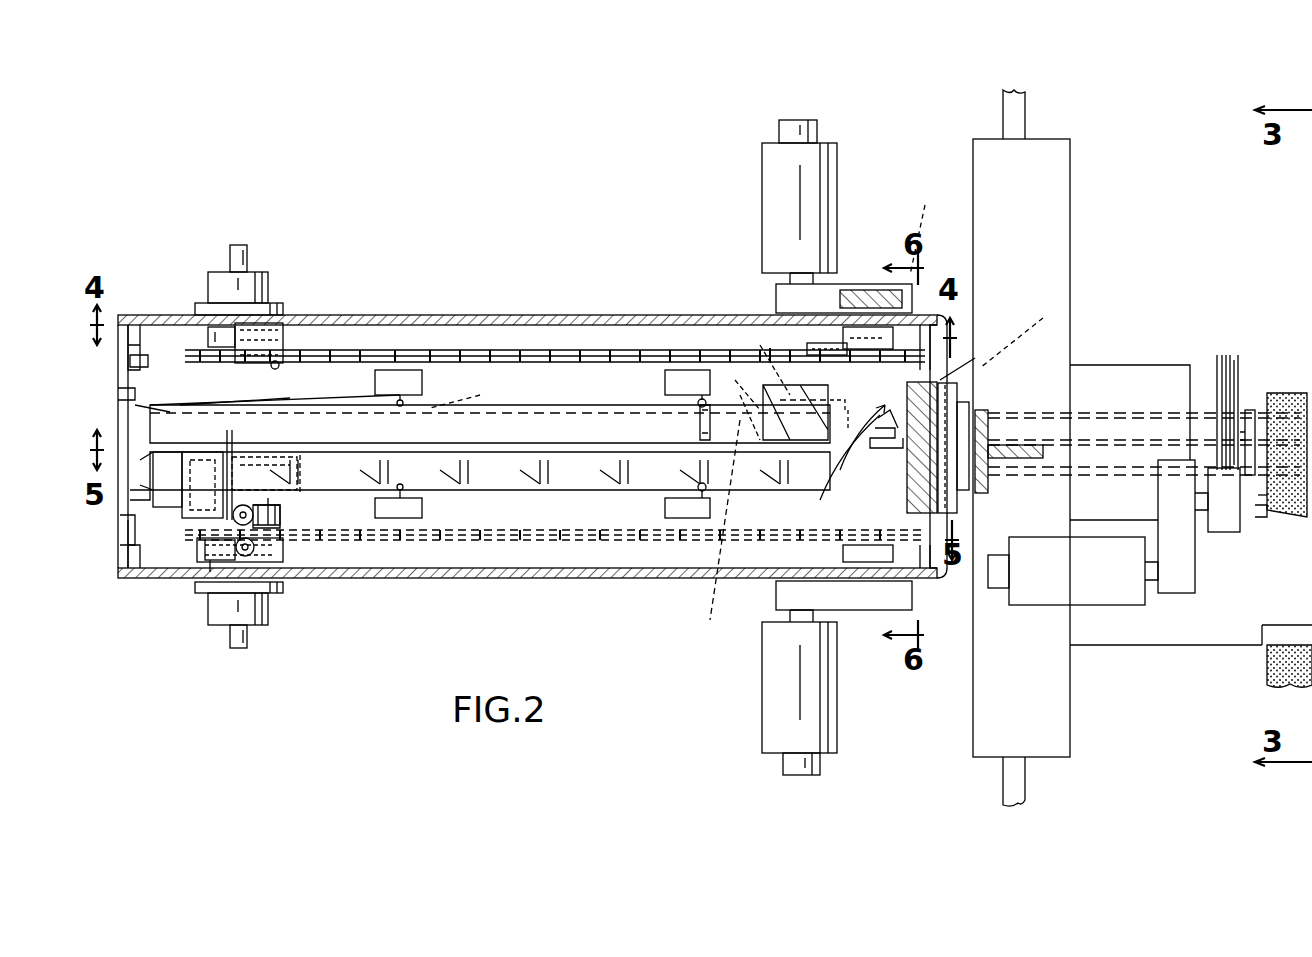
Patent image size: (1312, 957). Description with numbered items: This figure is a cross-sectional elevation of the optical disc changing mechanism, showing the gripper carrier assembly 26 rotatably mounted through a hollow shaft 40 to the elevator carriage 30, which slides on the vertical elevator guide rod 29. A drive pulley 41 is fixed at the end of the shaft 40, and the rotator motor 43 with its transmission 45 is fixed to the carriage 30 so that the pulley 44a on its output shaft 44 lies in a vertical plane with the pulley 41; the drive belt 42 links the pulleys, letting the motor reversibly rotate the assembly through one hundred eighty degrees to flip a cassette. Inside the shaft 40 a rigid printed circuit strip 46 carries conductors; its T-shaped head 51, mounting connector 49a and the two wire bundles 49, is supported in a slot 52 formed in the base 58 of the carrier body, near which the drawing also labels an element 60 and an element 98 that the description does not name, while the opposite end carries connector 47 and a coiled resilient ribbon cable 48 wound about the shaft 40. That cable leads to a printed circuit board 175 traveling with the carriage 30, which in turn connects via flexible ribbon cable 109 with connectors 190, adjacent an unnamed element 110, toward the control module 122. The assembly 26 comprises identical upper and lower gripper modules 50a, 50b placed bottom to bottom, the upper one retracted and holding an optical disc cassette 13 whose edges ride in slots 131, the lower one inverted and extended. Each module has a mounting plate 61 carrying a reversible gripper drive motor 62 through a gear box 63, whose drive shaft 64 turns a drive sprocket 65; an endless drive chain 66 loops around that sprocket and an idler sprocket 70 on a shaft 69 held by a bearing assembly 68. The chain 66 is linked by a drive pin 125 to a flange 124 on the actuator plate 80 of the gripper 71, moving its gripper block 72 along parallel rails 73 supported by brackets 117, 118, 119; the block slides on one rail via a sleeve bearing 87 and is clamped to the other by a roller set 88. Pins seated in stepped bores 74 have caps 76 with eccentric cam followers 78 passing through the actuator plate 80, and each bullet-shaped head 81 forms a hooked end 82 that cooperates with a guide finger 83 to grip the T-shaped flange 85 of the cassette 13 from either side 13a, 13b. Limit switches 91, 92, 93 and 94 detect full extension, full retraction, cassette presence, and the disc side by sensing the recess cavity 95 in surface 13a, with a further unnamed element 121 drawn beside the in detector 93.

The optical disc cassette 13 is at (316, 413).
The cassette side 13a is at (548, 390).
The cassette side 13b is at (565, 450).
The gripper carrier assembly 26 is at (537, 229).
The elevator guide rod 29 is at (1025, 103).
The elevator carriage 30 is at (1064, 254).
The hollow shaft 40 is at (1120, 380).
The drive pulley 41 is at (1240, 355).
The drive belt 42 is at (1222, 355).
The rotator motor 43 is at (1086, 585).
The output shaft 44 is at (1200, 500).
The pulley 44a is at (1215, 532).
The transmission 45 is at (1185, 572).
The printed circuit board strip 46 is at (1062, 434).
The multiple-conductor connector 47 is at (1262, 410).
The coiled ribbon cable 48 is at (1290, 400).
The wire bundles 49 is at (856, 445).
The multiple-conductor connector 49a is at (847, 468).
The upper gripper module 50a is at (565, 313).
The lower gripper module 50b is at (535, 588).
The T-shaped head 51 is at (878, 450).
The slot 52 is at (910, 460).
The base 58 is at (955, 385).
The hub 60 is at (962, 405).
The mounting plate 61 is at (505, 315).
The gripper drive motor 62 is at (775, 198).
The motor gear box 63 is at (788, 298).
The drive shaft 64 is at (860, 327).
The drive sprocket 65 is at (925, 330).
The endless drive chain 66 is at (645, 352).
The bearing assembly 68 is at (275, 280).
The shaft 69 is at (258, 233).
The idler sprocket 70 is at (208, 336).
The gripper 71 is at (245, 442).
The gripper block 72 is at (205, 458).
The rails 73 is at (148, 362).
The stepped bores 74 is at (160, 455).
The cap 76 is at (265, 465).
The cam follower 78 is at (312, 472).
The actuator plate 80 is at (290, 436).
The bullet-shaped head 81 is at (140, 445).
The hooked end 82 is at (118, 520).
The guide finger 83 is at (195, 410).
The flange 85 is at (700, 427).
The sleeve bearing 87 is at (822, 343).
The roller set 88 is at (255, 552).
The limit switch 91 is at (285, 340).
The limit switch 92 is at (871, 295).
The limit switch 93 is at (665, 380).
The limit switch 94 is at (422, 380).
The recess cavity 95 is at (471, 388).
The bearing 98 is at (985, 412).
The flexible ribbon cable 109 is at (1267, 683).
The wall 110 is at (1290, 525).
The bracket 117 is at (960, 585).
The bracket 118 is at (975, 320).
The bracket 119 is at (133, 338).
The pin 121 is at (695, 398).
The control module 122 is at (716, 530).
The flange 124 is at (350, 478).
The drive pin 125 is at (280, 500).
The slots 131 is at (118, 385).
The printed circuit board 175 is at (1155, 640).
The connectors 190 is at (1262, 630).